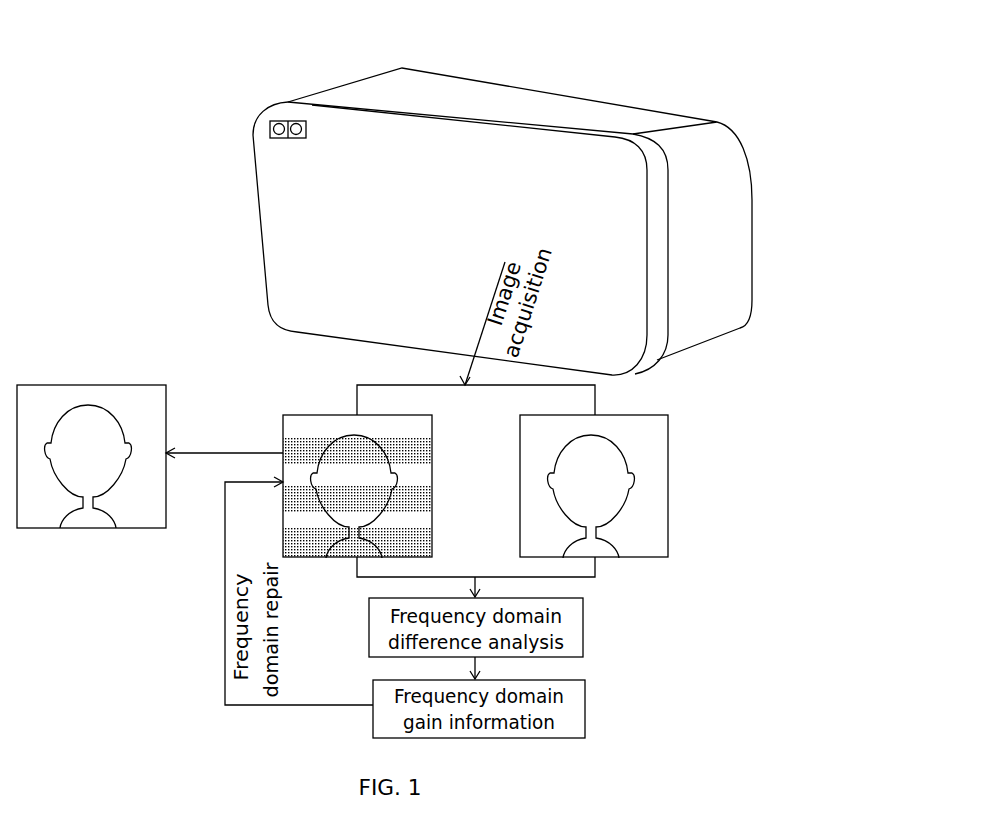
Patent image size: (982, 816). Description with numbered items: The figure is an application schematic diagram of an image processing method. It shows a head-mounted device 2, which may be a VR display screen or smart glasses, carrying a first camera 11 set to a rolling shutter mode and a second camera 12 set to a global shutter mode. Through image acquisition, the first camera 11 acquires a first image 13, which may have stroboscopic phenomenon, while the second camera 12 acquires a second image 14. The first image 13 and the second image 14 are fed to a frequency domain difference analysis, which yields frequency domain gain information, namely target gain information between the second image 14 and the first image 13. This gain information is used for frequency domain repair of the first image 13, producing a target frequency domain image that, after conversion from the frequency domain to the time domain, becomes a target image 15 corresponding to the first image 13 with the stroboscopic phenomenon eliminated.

The head-mounted device 2 is at (537, 91).
The first camera 11 is at (276, 139).
The second camera 12 is at (299, 139).
The first image 13 is at (432, 468).
The second image 14 is at (668, 467).
The target image 15 is at (93, 385).